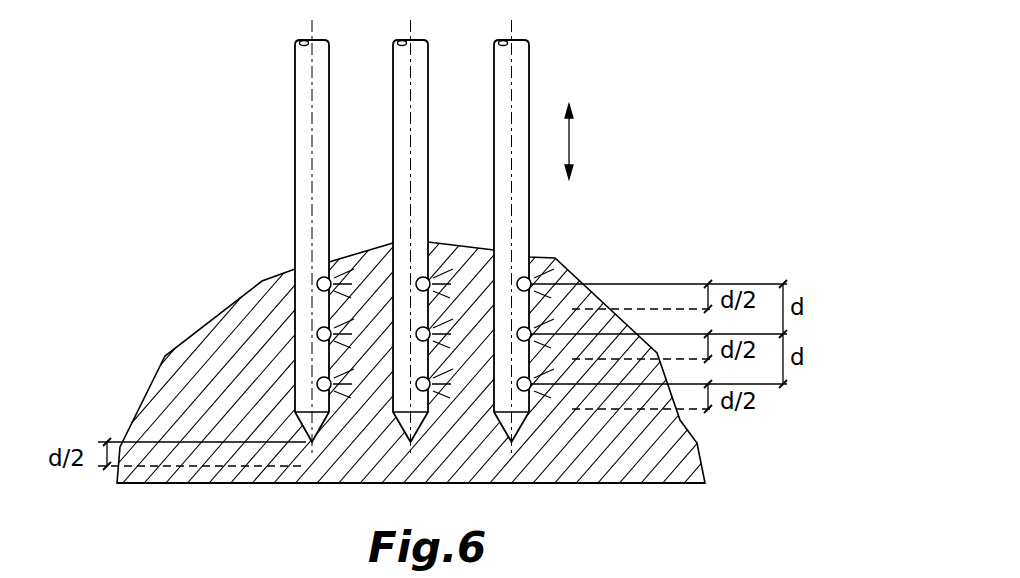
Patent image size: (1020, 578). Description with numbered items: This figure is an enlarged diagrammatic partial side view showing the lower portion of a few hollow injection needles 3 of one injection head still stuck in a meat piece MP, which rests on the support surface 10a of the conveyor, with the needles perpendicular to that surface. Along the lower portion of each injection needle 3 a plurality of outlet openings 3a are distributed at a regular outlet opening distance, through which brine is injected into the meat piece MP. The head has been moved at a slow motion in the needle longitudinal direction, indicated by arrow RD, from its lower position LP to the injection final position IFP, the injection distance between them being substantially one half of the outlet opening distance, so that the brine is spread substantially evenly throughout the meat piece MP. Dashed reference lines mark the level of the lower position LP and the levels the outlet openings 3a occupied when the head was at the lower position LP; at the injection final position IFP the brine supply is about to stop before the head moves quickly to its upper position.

The injection needle 3 is at (300, 122).
The outlet opening 3a is at (322, 334).
The support surface 10a is at (597, 485).
The meat piece MP is at (185, 357).
The injection final position IFP is at (153, 441).
The lower position LP is at (183, 468).
The reciprocating direction RD is at (588, 141).